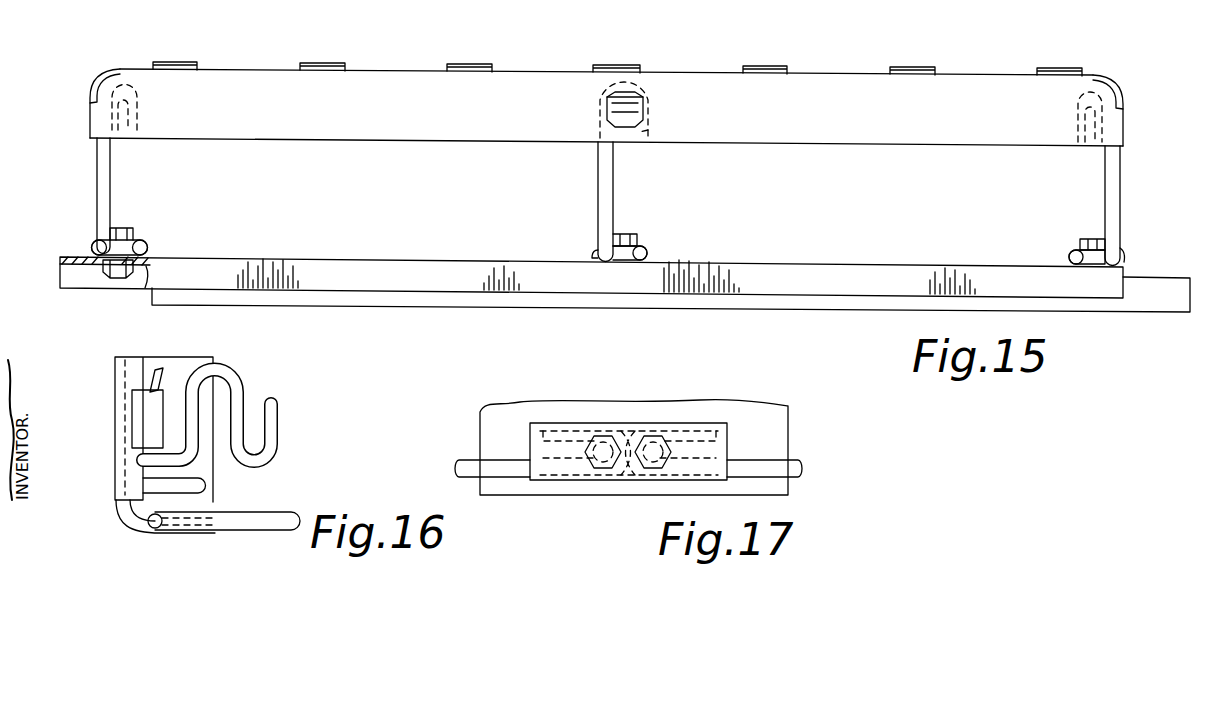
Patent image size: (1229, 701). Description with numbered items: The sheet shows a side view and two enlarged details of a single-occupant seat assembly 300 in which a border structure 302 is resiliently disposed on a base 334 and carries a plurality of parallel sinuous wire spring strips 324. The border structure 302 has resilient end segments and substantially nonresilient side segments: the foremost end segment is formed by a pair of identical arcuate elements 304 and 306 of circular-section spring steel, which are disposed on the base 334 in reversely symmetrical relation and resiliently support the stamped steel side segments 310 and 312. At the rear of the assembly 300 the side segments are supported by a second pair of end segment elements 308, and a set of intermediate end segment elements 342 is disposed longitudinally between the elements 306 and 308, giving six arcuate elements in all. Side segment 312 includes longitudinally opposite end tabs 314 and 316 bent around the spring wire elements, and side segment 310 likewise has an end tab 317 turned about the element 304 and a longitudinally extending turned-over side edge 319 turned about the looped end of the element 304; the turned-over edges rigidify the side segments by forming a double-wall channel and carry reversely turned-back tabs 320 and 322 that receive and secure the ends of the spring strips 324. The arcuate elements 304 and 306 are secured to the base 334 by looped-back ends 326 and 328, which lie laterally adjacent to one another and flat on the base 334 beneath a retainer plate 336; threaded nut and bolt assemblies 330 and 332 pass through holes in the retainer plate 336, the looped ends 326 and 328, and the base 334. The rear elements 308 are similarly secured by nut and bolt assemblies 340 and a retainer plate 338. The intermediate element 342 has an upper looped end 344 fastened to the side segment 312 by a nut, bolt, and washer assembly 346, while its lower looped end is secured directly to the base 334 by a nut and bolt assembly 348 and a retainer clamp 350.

In FIG. 15, the single-occupant seat assembly 300 is at (965, 68).
In FIG. 15, the border structure 302 is at (408, 47).
In FIG. 16, the arcuate element 304 is at (270, 518).
In FIG. 17, the arcuate element 304 is at (462, 462).
In FIG. 15, the arcuate element 306 is at (108, 172).
In FIG. 17, the arcuate element 306 is at (800, 466).
In FIG. 15, the end segment elements 308 is at (1120, 176).
In FIG. 16, the side segment 310 is at (120, 366).
In FIG. 15, the side segment 312 is at (430, 130).
In FIG. 15, the end tab 314 is at (1124, 112).
In FIG. 15, the end tab 316 is at (90, 100).
In FIG. 16, the end tab 317 is at (160, 526).
In FIG. 16, the turned-over side edge 319 is at (120, 410).
In FIG. 16, the reversely turned-back tab 320 is at (163, 402).
In FIG. 15, the reversely turned-back tab 322 is at (632, 48).
In FIG. 16, the sinuous wire spring strips 324 is at (278, 418).
In FIG. 17, the looped-back end 326 is at (582, 425).
In FIG. 15, the looped-back end 328 is at (137, 100).
In FIG. 17, the looped-back end 328 is at (702, 425).
In FIG. 17, the threaded nut and bolt assembly 330 is at (605, 467).
In FIG. 15, the threaded nut and bolt assembly 332 is at (125, 235).
In FIG. 17, the threaded nut and bolt assembly 332 is at (655, 437).
In FIG. 15, the base 334 is at (862, 264).
In FIG. 15, the retainer plate 336 is at (92, 247).
In FIG. 17, the retainer plate 336 is at (538, 423).
In FIG. 15, the retainer plate 338 is at (1070, 253).
In FIG. 15, the nut and bolt assemblies 340 is at (1095, 236).
In FIG. 15, the intermediate end segment element 342 is at (614, 190).
In FIG. 15, the upper looped end 344 is at (650, 125).
In FIG. 15, the nut, bolt, and washer assembly 346 is at (606, 117).
In FIG. 15, the nut and bolt assembly 348 is at (648, 243).
In FIG. 15, the retainer clamp 350 is at (598, 253).